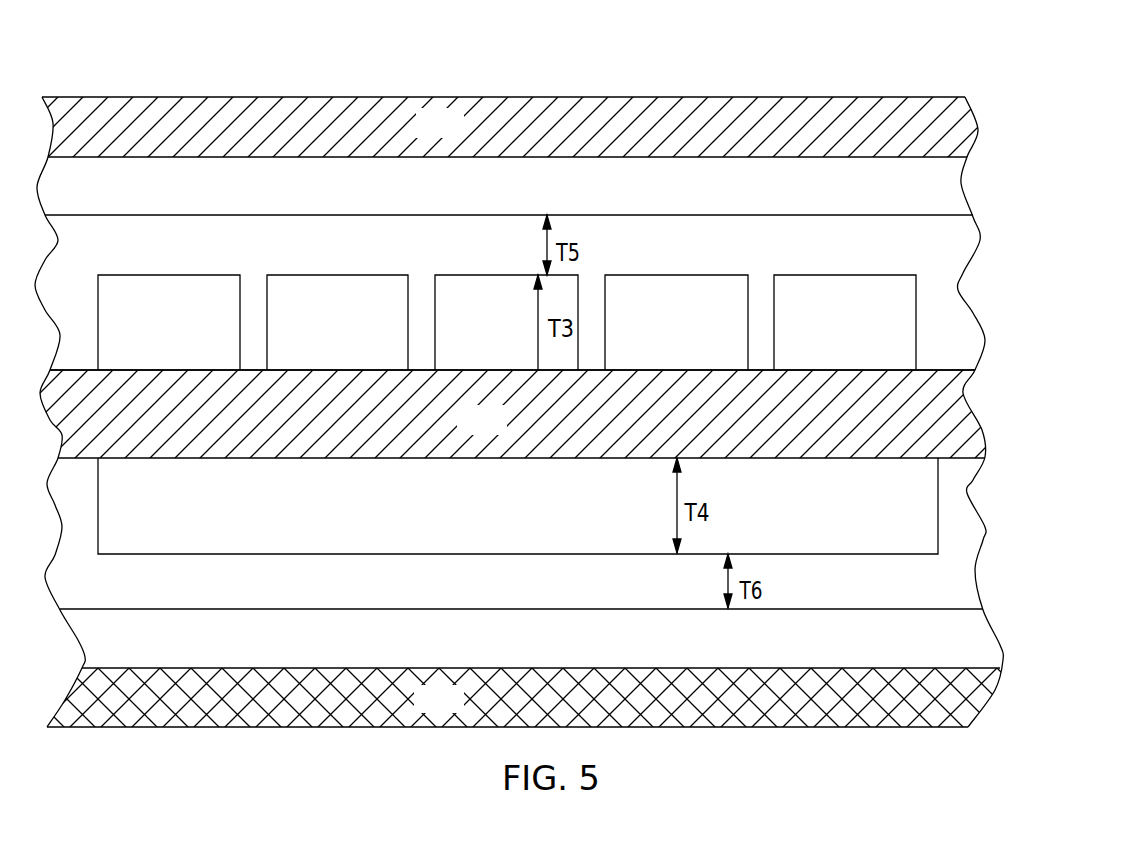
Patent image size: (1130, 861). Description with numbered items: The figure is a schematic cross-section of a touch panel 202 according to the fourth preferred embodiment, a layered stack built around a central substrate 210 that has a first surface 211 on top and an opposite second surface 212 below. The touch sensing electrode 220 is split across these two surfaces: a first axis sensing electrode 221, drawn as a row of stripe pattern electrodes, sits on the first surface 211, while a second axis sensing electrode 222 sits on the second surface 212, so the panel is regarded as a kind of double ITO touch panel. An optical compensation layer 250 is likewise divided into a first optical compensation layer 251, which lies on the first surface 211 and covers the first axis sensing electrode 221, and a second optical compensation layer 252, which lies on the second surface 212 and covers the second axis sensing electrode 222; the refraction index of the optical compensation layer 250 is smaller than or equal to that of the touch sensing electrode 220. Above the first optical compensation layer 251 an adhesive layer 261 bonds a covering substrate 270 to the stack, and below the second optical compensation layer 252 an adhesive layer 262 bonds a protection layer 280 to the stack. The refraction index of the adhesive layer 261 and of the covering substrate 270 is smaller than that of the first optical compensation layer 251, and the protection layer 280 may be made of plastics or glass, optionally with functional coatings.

The touch panel 202 is at (988, 127).
The substrate 210 is at (463, 430).
The first surface 211 is at (946, 370).
The second surface 212 is at (945, 458).
The touch sensing electrode 220 is at (518, 414).
The first axis sensing electrode 221 is at (125, 336).
The second axis sensing electrode 222 is at (450, 516).
The optical compensation layer 250 is at (510, 292).
The first optical compensation layer 251 is at (257, 258).
The second optical compensation layer 252 is at (457, 584).
The adhesive layer 261 is at (422, 200).
The adhesive layer 262 is at (420, 643).
The covering substrate 270 is at (422, 134).
The protection layer 280 is at (420, 710).